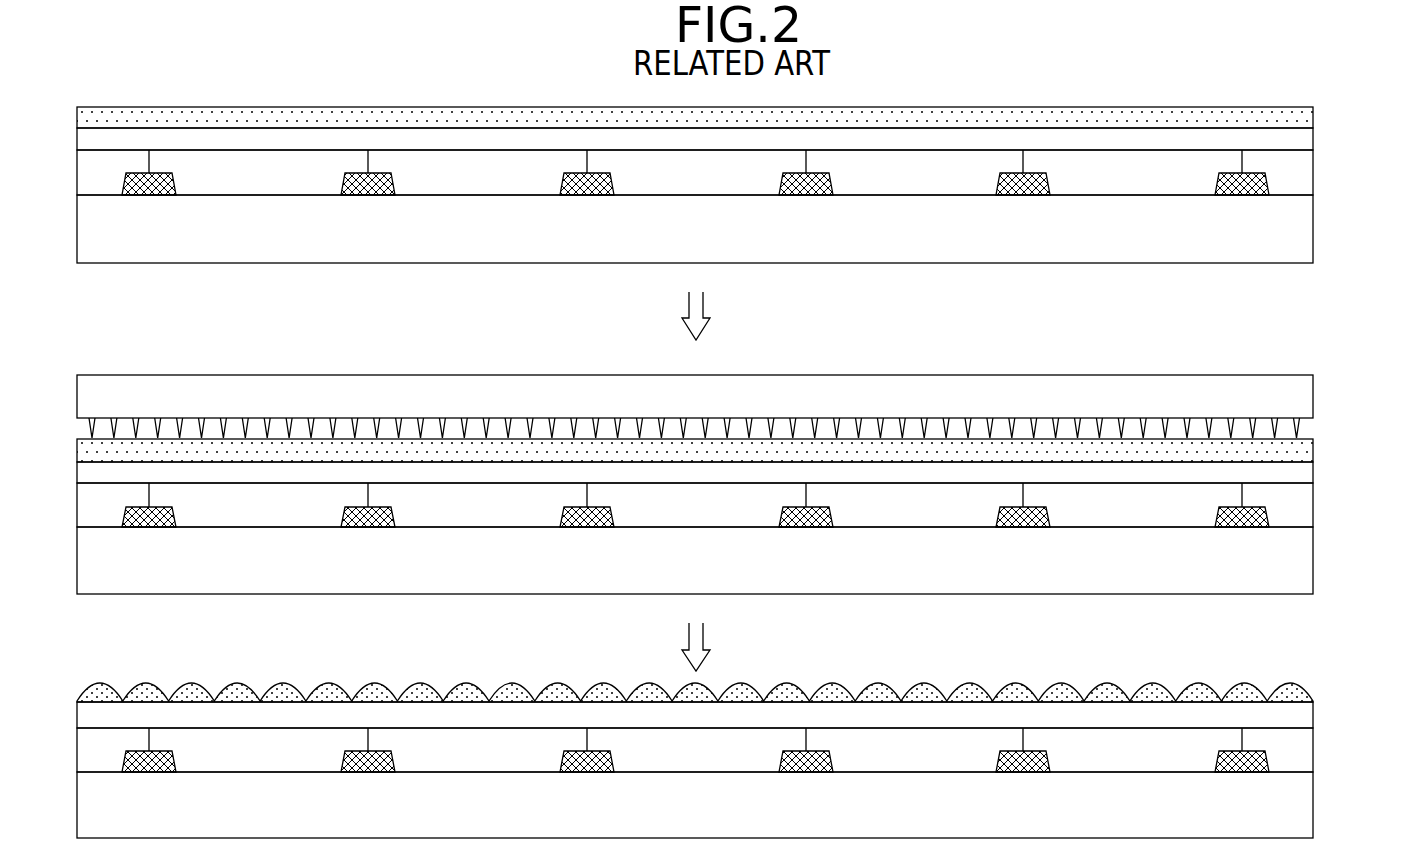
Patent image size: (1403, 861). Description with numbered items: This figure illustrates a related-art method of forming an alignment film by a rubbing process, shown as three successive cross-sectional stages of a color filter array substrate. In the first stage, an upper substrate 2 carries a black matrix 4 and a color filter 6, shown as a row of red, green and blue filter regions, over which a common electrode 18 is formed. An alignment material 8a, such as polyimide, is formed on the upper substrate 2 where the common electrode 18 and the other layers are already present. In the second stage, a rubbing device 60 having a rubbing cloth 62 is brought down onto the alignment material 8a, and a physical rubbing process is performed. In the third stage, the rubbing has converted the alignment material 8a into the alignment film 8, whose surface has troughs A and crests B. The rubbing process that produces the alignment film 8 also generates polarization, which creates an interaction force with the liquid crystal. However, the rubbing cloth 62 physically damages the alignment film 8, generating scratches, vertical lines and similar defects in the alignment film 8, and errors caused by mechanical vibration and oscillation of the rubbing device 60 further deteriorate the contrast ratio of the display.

The upper substrate 2 is at (1314, 230).
The black matrix 4 is at (160, 196).
The color filter 6 is at (1314, 178).
The common electrode 18 is at (1314, 140).
The alignment material 8a is at (1314, 117).
The alignment film 8 is at (1314, 692).
The rubbing device 60 is at (1308, 392).
The rubbing cloth 62 is at (1302, 427).
The troughs A is at (1260, 698).
The crests B is at (1289, 682).